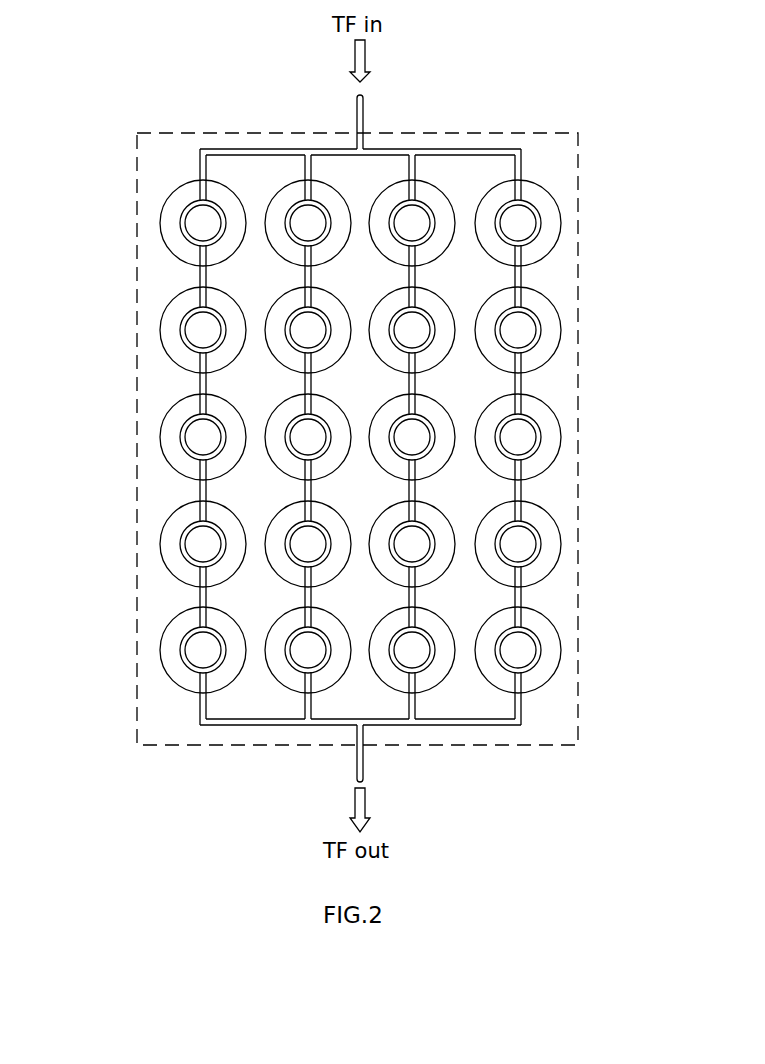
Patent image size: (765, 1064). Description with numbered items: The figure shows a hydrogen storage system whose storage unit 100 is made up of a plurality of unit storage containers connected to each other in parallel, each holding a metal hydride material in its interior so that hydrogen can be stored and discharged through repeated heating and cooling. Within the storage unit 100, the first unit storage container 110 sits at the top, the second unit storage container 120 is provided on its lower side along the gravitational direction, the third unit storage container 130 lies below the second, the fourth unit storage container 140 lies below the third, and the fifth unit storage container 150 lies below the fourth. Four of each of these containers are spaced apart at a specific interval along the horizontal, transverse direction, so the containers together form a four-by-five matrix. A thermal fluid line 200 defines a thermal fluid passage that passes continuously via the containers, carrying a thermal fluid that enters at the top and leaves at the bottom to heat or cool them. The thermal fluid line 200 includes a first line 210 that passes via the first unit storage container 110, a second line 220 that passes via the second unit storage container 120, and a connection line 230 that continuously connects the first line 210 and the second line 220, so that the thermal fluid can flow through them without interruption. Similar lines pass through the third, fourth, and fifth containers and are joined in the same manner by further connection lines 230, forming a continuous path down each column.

The storage unit 100 is at (135, 133).
The first unit storage container 110 is at (561, 223).
The second unit storage container 120 is at (561, 330).
The third unit storage container 130 is at (561, 437).
The fourth unit storage container 140 is at (561, 544).
The fifth unit storage container 150 is at (561, 650).
The thermal fluid line 200 is at (530, 190).
The first line 210 is at (180, 224).
The second line 220 is at (181, 331).
The connection line 230 is at (196, 276).